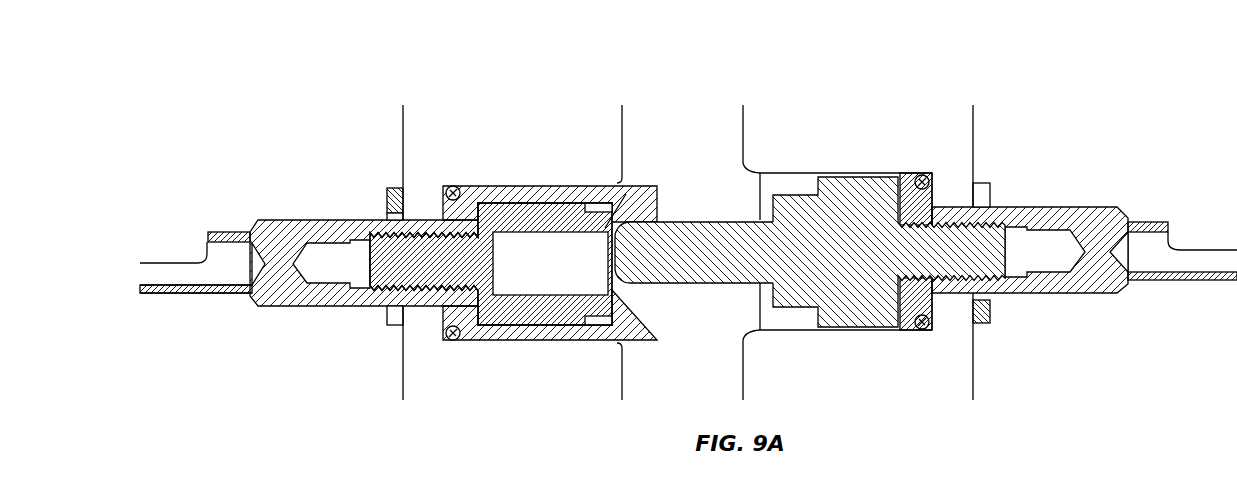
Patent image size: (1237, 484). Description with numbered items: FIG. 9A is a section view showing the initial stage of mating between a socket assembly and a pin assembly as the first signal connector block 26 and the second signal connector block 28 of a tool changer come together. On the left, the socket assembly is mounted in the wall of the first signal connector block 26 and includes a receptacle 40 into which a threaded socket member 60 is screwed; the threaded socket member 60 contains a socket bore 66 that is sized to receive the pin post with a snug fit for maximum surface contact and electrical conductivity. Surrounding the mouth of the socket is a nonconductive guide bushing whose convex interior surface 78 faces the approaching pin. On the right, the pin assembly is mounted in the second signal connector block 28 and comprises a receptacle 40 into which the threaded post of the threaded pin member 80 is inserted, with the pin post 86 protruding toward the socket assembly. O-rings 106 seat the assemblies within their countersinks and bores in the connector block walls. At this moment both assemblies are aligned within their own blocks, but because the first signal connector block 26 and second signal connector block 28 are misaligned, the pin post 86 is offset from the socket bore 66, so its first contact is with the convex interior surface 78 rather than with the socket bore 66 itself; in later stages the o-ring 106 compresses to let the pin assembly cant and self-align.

The first signal connector block 26 is at (566, 130).
The second signal connector block 28 is at (797, 142).
The receptacle 40 is at (266, 246).
The threaded socket member 60 is at (412, 271).
The socket bore 66 is at (542, 271).
The convex interior surface 78 is at (651, 213).
The threaded pin member 80 is at (833, 261).
The pin post 86 is at (683, 248).
The o-ring 106 is at (459, 187).